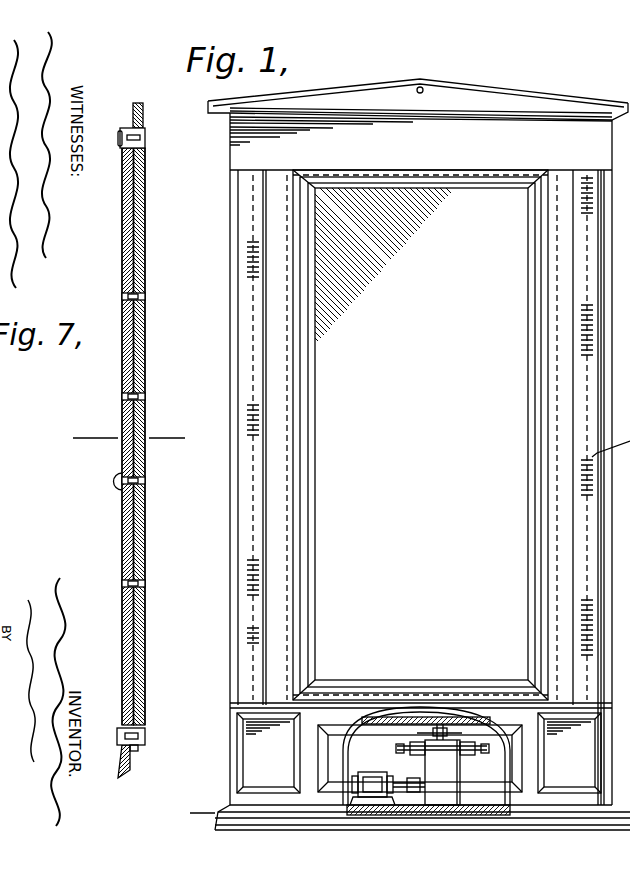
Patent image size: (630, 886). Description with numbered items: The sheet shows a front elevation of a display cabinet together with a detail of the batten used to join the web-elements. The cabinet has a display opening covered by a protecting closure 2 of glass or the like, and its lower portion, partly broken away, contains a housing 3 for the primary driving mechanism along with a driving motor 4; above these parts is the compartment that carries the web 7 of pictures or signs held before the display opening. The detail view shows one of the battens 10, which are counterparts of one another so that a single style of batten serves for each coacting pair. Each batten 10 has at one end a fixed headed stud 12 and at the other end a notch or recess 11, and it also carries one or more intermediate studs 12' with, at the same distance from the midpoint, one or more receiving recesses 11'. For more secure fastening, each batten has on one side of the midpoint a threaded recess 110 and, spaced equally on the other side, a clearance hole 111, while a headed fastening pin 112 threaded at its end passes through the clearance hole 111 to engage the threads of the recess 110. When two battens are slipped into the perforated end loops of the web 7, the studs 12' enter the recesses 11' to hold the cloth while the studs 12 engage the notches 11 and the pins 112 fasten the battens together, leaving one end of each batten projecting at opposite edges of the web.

In FIG. 1, the protecting closure 2 is at (420, 435).
In FIG. 1, the housing 3 is at (455, 778).
In FIG. 1, the driving motor 4 is at (387, 778).
In FIG. 7, the web 7 is at (155, 513).
In FIG. 7, the batten 10 is at (144, 117).
In FIG. 7, the notch or recess 11 is at (138, 432).
In FIG. 7, the fixed headed stud 12 is at (155, 434).
In FIG. 7, the intermediate stud 12' is at (138, 429).
In FIG. 7, the receiving recess 11' is at (134, 442).
In FIG. 7, the threaded recess 110 is at (122, 397).
In FIG. 7, the clearance hole 111 is at (140, 395).
In FIG. 7, the headed fastening pin 112 is at (116, 483).